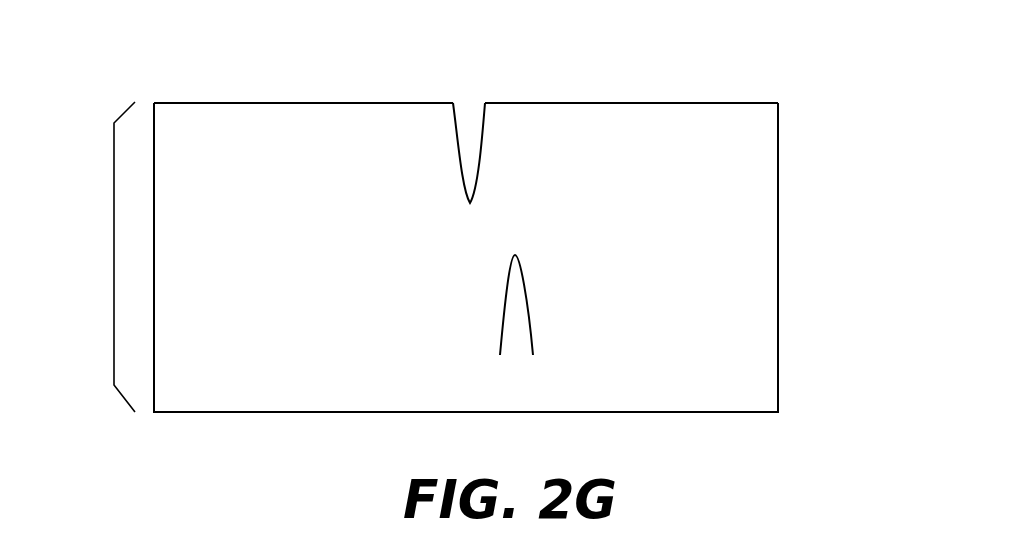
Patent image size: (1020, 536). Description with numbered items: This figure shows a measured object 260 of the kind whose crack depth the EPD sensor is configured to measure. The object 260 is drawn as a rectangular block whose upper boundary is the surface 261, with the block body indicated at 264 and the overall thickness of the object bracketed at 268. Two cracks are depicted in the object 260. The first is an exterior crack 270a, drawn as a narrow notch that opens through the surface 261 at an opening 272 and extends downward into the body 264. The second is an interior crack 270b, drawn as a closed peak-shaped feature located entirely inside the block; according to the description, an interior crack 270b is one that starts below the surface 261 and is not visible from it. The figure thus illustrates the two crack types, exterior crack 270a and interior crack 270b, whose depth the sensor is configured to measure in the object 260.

The object 260 is at (557, 213).
The surface 261 is at (715, 102).
The substrate body 264 is at (752, 195).
The thickness of substrate 268 is at (113, 235).
The opening of recess 272 is at (506, 108).
The exterior crack 270a is at (485, 145).
The interior crack 270b is at (530, 317).